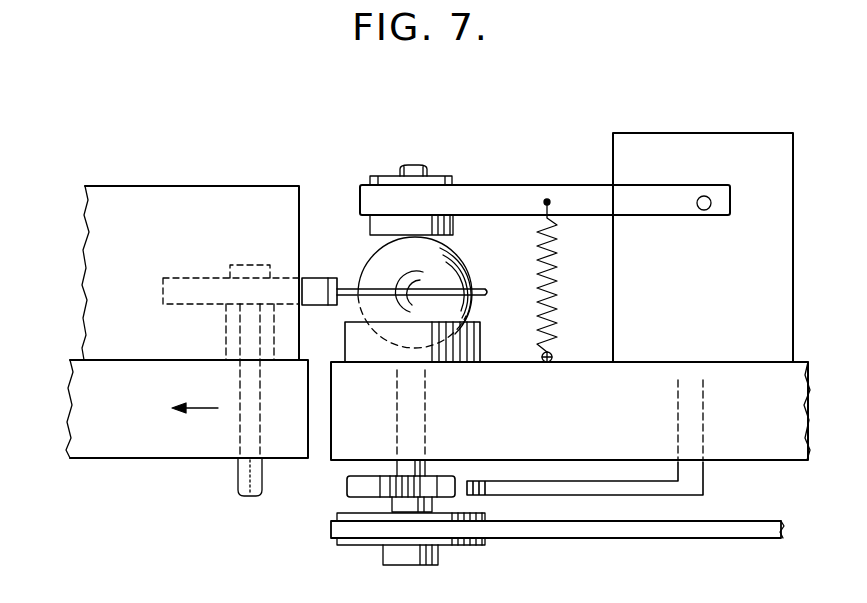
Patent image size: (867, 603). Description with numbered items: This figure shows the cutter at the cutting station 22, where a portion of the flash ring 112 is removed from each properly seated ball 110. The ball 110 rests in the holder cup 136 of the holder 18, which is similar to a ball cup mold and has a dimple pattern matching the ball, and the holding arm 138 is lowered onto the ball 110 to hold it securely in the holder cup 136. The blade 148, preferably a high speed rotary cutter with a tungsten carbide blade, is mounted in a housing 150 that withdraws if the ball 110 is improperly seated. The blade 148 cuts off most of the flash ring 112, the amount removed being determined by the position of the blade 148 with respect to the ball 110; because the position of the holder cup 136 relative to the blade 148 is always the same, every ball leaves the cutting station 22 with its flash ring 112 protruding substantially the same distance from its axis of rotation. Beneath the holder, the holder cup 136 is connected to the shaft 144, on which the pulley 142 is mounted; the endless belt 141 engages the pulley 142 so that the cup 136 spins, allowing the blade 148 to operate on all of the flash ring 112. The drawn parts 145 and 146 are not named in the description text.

The cutting station 22 is at (187, 307).
The housing 150 is at (222, 185).
The holder 18 is at (656, 121).
The holding arm 138 is at (494, 192).
The ball 110 is at (455, 257).
The flash ring 112 is at (470, 288).
The holder cup 136 is at (472, 343).
The blade 148 is at (310, 278).
The shaft 144 is at (432, 470).
The knob 145 is at (347, 486).
The link bar 146 is at (592, 490).
The endless belt 141 is at (667, 533).
The pulley 142 is at (462, 545).